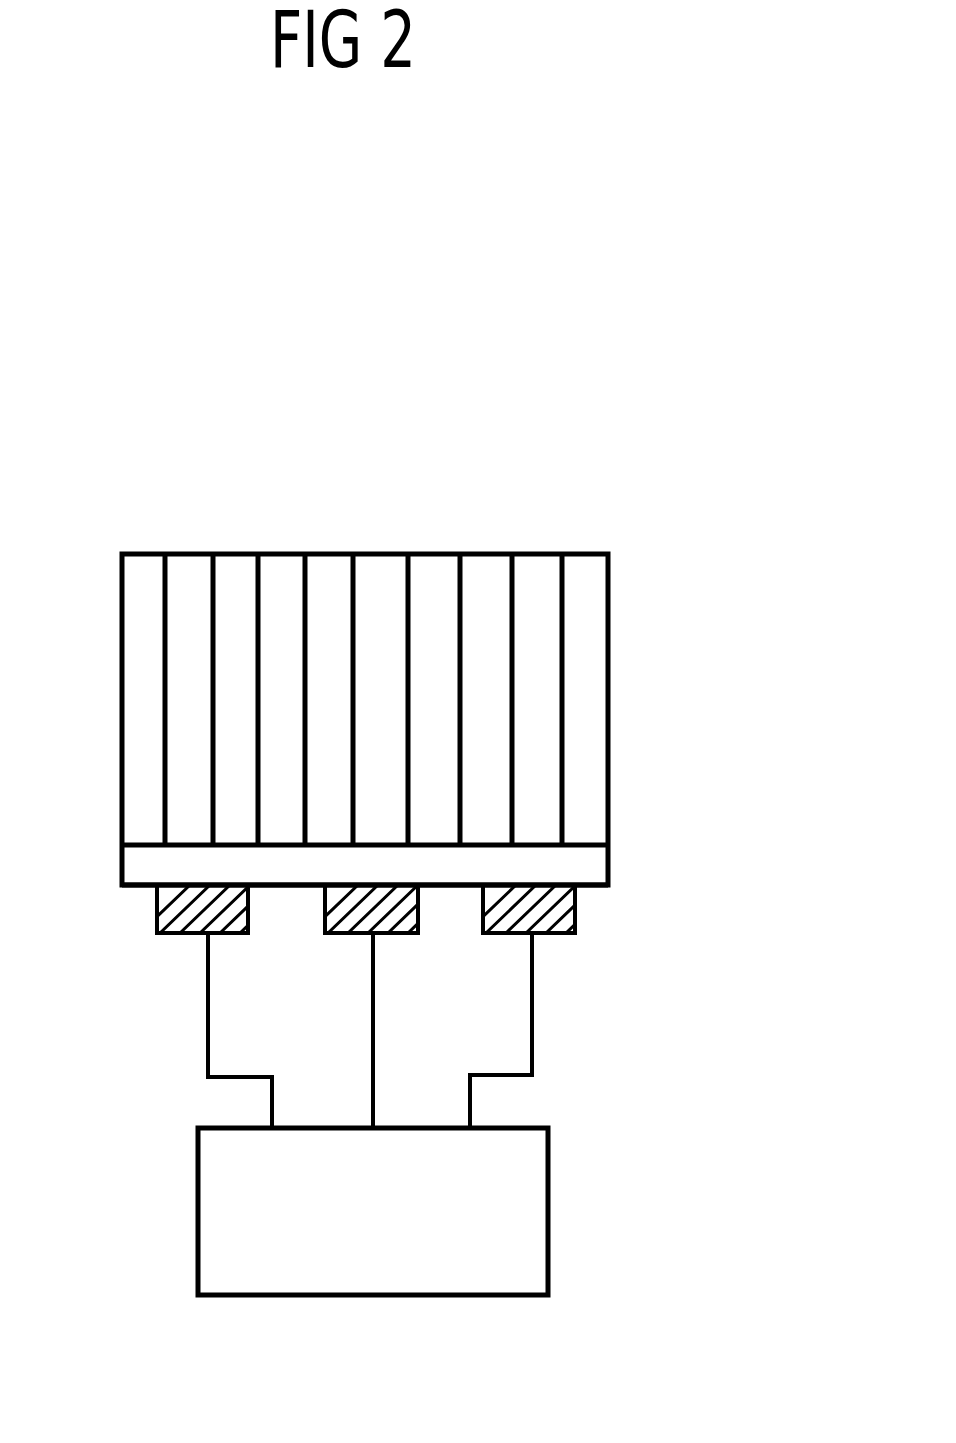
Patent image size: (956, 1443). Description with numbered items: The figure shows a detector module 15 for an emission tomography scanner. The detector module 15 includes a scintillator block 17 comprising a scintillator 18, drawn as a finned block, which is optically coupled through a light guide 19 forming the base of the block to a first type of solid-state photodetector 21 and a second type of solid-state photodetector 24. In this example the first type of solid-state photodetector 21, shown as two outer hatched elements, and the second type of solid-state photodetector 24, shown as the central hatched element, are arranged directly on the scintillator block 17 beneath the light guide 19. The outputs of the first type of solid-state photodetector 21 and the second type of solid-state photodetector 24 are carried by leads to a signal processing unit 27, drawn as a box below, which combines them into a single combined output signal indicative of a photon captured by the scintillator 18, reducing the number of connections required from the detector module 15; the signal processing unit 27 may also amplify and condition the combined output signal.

The detector module 15 is at (388, 605).
The scintillator block 17 is at (388, 719).
The scintillator 18 is at (147, 632).
The light guide 19 is at (573, 860).
The first type of solid-state photodetector 21 is at (172, 935).
The second type of solid-state photodetector 24 is at (338, 935).
The signal processing unit 27 is at (548, 1217).